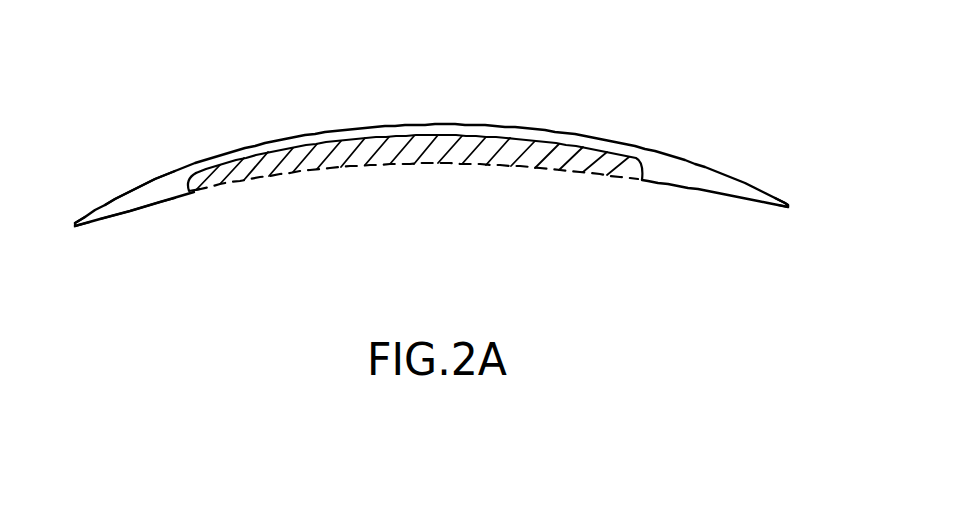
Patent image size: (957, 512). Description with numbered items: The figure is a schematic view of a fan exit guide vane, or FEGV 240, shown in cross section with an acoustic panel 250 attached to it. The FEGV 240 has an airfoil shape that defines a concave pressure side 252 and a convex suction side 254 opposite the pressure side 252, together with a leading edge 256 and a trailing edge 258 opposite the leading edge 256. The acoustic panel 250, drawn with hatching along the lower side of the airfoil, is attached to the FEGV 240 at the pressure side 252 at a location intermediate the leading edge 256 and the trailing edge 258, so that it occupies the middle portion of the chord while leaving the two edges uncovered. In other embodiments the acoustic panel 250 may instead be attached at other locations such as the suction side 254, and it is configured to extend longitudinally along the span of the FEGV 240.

The FEGV 240 is at (185, 104).
The acoustic panel 250 is at (455, 186).
The pressure side 252 is at (137, 215).
The suction side 254 is at (142, 183).
The leading edge 256 is at (75, 228).
The trailing edge 258 is at (788, 202).